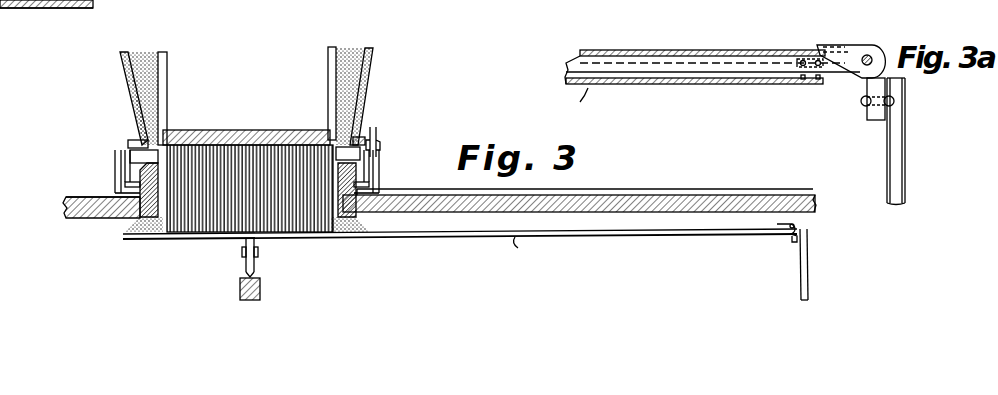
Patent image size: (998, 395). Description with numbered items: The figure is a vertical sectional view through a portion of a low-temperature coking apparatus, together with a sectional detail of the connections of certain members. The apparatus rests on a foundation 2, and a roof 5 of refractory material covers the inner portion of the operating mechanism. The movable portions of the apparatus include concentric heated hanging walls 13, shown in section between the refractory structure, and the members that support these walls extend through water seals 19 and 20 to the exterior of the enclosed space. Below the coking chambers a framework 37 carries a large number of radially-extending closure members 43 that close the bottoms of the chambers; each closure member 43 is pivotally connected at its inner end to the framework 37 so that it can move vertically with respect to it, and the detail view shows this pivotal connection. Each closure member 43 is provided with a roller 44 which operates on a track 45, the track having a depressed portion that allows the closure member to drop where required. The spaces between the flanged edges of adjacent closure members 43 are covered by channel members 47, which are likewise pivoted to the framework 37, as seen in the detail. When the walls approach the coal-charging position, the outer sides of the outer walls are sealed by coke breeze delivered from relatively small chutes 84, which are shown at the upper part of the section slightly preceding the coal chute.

In FIG. 3a, the foundation 2 is at (578, 0).
In FIG. 3, the roof 5 is at (618, 196).
In FIG. 3, the heated hanging walls 13 is at (183, 233).
In FIG. 3, the water seal 19 is at (373, 188).
In FIG. 3, the water seal 20 is at (115, 187).
In FIG. 3a, the framework 37 is at (902, 163).
In FIG. 3, the closure member 43 is at (467, 237).
In FIG. 3a, the closure member 43 is at (708, 80).
In FIG. 3, the roller 44 is at (257, 263).
In FIG. 3, the track 45 is at (243, 279).
In FIG. 3a, the channel member 47 is at (747, 37).
In FIG. 3, the chute 84 is at (133, 108).